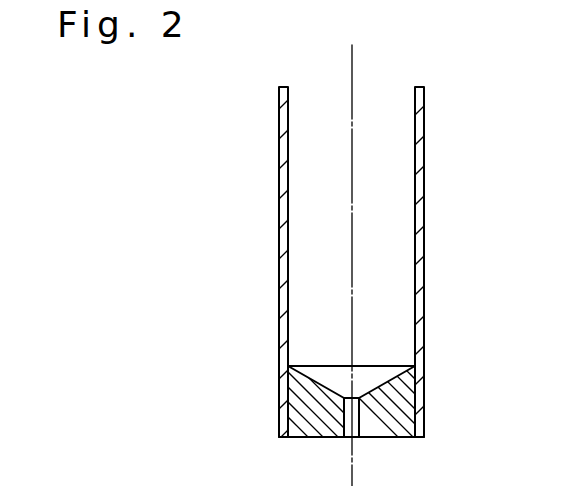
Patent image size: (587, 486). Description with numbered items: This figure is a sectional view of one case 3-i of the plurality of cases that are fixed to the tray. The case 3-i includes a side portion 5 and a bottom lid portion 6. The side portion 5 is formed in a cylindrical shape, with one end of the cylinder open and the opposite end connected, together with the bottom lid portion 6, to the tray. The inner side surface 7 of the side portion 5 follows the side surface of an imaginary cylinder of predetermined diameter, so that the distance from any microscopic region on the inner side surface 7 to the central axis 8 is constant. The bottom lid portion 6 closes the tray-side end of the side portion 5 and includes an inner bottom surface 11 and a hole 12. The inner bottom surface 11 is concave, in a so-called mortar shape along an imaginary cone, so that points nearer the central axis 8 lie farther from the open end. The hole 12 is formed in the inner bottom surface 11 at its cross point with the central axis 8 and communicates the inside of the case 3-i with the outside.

The case 3-i is at (237, 130).
The side portion 5 is at (418, 240).
The bottom lid portion 6 is at (405, 417).
The inner side surface 7 is at (416, 290).
The central axis 8 is at (352, 458).
The inner bottom surface 11 is at (313, 380).
The hole 12 is at (355, 410).